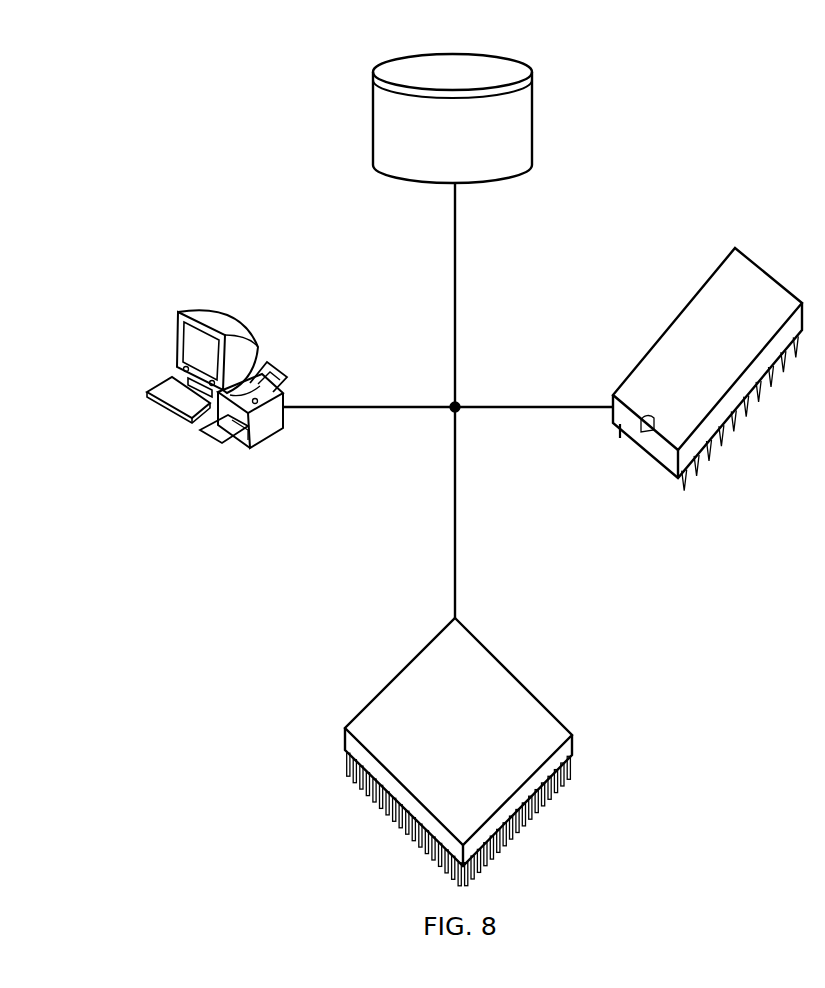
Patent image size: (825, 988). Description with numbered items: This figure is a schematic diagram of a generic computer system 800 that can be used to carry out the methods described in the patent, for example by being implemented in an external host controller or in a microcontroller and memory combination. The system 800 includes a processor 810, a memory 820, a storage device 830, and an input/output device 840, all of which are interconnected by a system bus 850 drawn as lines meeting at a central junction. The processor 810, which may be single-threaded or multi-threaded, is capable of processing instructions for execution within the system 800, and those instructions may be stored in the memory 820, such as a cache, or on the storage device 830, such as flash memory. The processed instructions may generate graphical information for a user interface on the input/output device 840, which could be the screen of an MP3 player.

The computer system 800 is at (182, 136).
The processor 810 is at (400, 672).
The memory 820 is at (672, 322).
The storage device 830 is at (450, 54).
The input/output device 840 is at (180, 313).
The system bus 850 is at (376, 407).